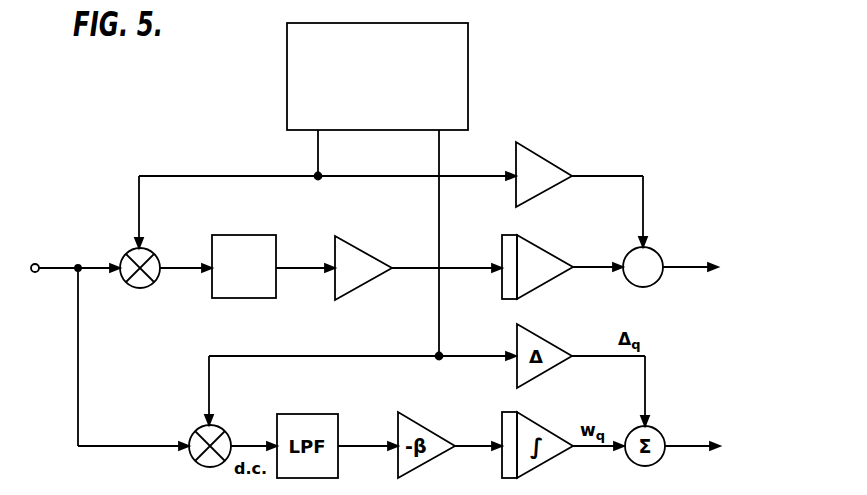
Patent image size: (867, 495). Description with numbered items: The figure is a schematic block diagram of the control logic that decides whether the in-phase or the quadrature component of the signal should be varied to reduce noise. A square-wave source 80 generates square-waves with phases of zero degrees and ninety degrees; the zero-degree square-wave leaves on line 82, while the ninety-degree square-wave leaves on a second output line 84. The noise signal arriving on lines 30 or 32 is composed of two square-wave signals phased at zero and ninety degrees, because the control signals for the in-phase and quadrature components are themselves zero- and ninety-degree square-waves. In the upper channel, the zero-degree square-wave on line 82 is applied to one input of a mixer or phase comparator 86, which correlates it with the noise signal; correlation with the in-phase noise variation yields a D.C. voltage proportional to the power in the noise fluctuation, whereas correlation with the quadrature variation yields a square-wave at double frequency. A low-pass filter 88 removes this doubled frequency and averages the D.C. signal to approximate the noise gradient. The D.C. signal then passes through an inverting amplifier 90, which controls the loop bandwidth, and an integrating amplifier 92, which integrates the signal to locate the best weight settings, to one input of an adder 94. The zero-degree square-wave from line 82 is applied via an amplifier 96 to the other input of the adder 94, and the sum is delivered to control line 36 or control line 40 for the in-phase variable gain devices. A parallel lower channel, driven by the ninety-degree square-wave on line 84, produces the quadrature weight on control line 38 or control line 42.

The noise signal line 30 is at (110, 328).
The noise signal line 32 is at (52, 268).
The square-wave source 80 is at (433, 23).
The 0° square-wave output line 82 is at (318, 153).
The 90 degree square-wave output line 84 is at (439, 157).
The mixer or phase comparator 86 is at (134, 289).
The low-pass filter 88 is at (245, 300).
The inverting amplifier 90 is at (358, 299).
The integrating amplifier 92 is at (502, 289).
The adder 94 is at (627, 283).
The amplifier 96 is at (545, 153).
The control signal line 36 is at (726, 284).
The control signal line 40 is at (680, 268).
The output weight signal wq+delta q 38 is at (725, 422).
The output weight signal wq+delta q 42 is at (688, 445).